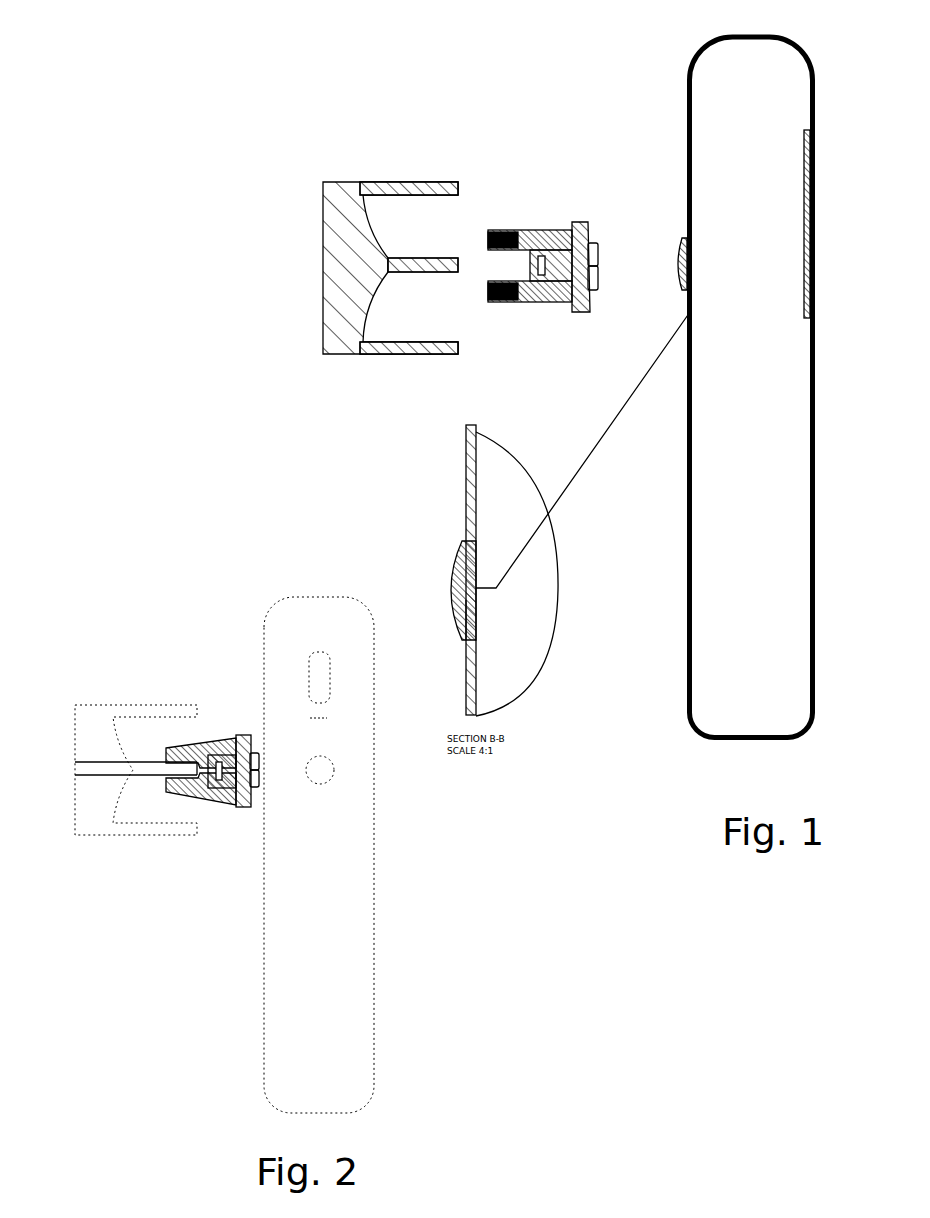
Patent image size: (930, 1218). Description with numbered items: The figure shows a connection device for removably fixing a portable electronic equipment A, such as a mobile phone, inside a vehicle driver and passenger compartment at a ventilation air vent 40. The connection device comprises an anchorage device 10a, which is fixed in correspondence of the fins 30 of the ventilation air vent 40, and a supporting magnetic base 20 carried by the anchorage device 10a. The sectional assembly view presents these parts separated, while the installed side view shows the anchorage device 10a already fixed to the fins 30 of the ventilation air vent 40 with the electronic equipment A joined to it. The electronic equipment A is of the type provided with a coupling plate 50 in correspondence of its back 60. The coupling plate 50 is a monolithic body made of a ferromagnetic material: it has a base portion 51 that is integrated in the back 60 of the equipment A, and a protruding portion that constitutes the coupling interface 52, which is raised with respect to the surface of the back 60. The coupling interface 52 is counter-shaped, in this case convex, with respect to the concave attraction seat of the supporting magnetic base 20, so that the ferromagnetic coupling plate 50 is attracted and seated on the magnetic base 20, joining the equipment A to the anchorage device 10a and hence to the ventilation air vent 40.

In FIG. 1, the anchorage device 10a is at (544, 222).
In FIG. 2, the anchorage device 10a is at (223, 717).
In FIG. 1, the supporting magnetic base 20 is at (599, 283).
In FIG. 2, the supporting magnetic base 20 is at (254, 770).
In FIG. 1, the fins 30 is at (447, 258).
In FIG. 2, the fins 30 is at (136, 768).
In FIG. 1, the ventilation air vent 40 is at (338, 296).
In FIG. 2, the ventilation air vent 40 is at (136, 770).
In FIG. 1, the coupling plate 50 is at (671, 230).
In FIG. 1, the base portion 51 is at (470, 620).
In FIG. 1, the coupling interface 52 is at (450, 572).
In FIG. 1, the back 60 is at (686, 548).
In FIG. 2, the back 60 is at (319, 855).
In FIG. 1, the portable electronic equipment A is at (763, 322).